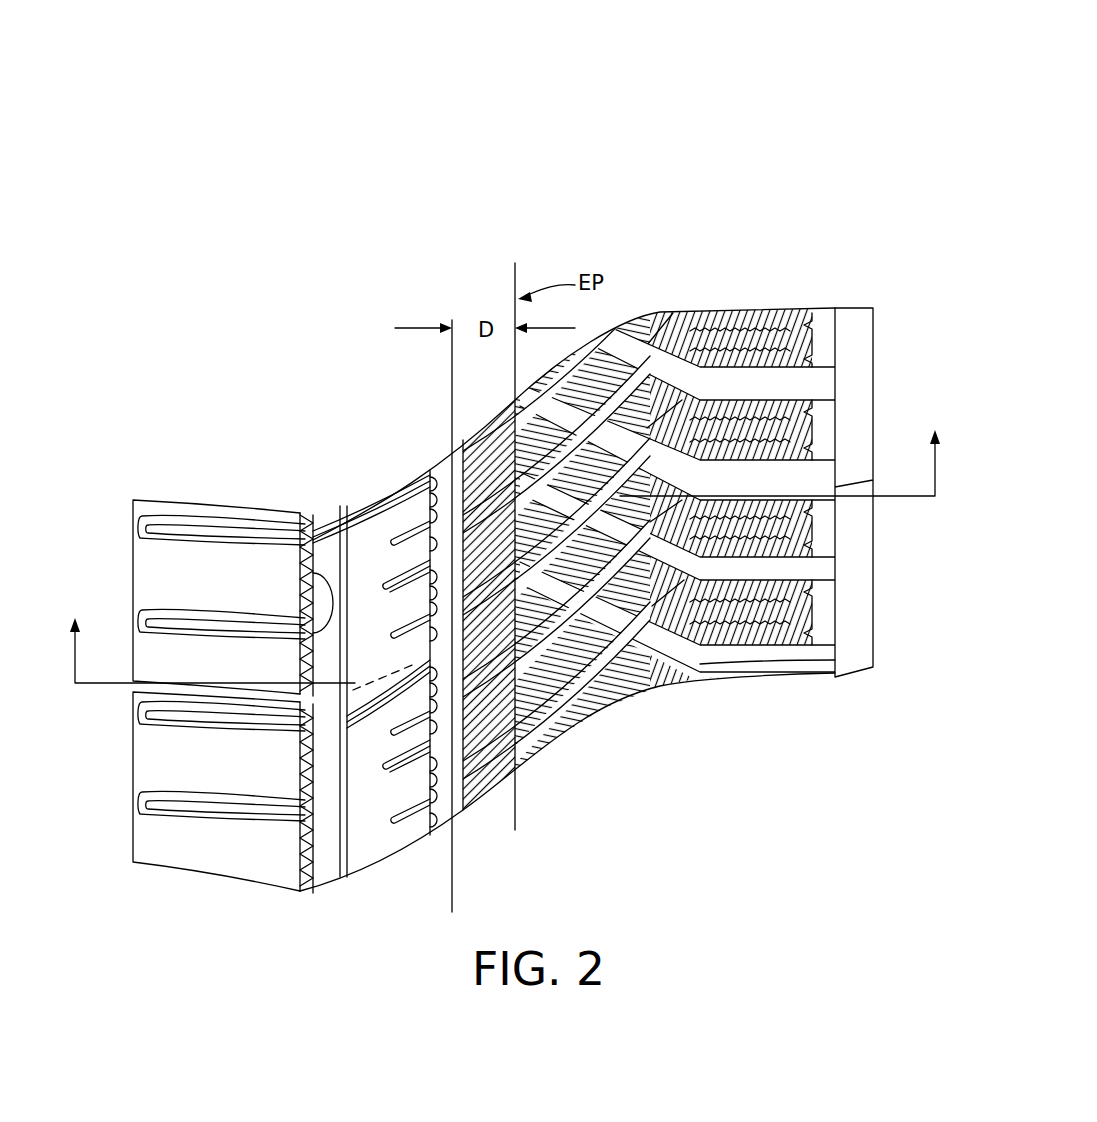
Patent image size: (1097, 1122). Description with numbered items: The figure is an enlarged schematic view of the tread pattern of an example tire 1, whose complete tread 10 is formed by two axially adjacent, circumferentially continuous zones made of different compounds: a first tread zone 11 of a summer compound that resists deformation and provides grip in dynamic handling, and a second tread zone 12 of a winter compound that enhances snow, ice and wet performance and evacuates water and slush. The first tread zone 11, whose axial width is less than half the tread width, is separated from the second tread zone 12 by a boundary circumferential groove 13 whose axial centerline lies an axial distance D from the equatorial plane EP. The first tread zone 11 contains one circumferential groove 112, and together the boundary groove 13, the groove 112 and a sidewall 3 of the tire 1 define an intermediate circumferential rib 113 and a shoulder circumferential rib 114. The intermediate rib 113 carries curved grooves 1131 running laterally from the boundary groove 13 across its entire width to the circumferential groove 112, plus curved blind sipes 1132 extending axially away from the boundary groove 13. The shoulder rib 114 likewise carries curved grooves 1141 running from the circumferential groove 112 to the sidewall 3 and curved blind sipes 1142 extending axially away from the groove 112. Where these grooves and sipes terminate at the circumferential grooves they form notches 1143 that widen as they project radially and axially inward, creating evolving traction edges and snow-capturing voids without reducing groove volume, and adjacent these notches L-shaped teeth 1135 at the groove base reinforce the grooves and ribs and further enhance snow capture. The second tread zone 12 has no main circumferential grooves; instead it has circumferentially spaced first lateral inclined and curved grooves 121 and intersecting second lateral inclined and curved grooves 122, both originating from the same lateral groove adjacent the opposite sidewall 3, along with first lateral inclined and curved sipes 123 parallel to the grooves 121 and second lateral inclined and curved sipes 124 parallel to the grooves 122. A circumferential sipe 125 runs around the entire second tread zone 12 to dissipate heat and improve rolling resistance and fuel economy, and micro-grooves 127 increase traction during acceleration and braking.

The tire 1 is at (703, 75).
The tread 10 is at (762, 103).
The first tread zone 11 is at (452, 912).
The second tread zone 12 is at (532, 912).
The boundary circumferential groove 13 is at (470, 810).
The circumferential groove 112 is at (345, 540).
The intermediate circumferential rib 113 is at (350, 877).
The curved grooves 1131 is at (383, 583).
The curved blind sipes 1132 is at (403, 537).
The shoulder circumferential rib 114 is at (192, 730).
The curved grooves 1141 is at (179, 530).
The curved blind sipes 1142 is at (305, 768).
The L-shaped teeth 1135 is at (305, 580).
The notches 1143 is at (313, 807).
The first lateral inclined and curved grooves 121 is at (703, 340).
The second lateral inclined and curved grooves 122 is at (650, 377).
The first lateral inclined and curved sipes 123 is at (605, 375).
The second lateral inclined and curved sipes 124 is at (605, 675).
The circumferential sipe 125 is at (800, 607).
The micro-grooves 127 is at (625, 385).
The sidewall 3 is at (504, 538).